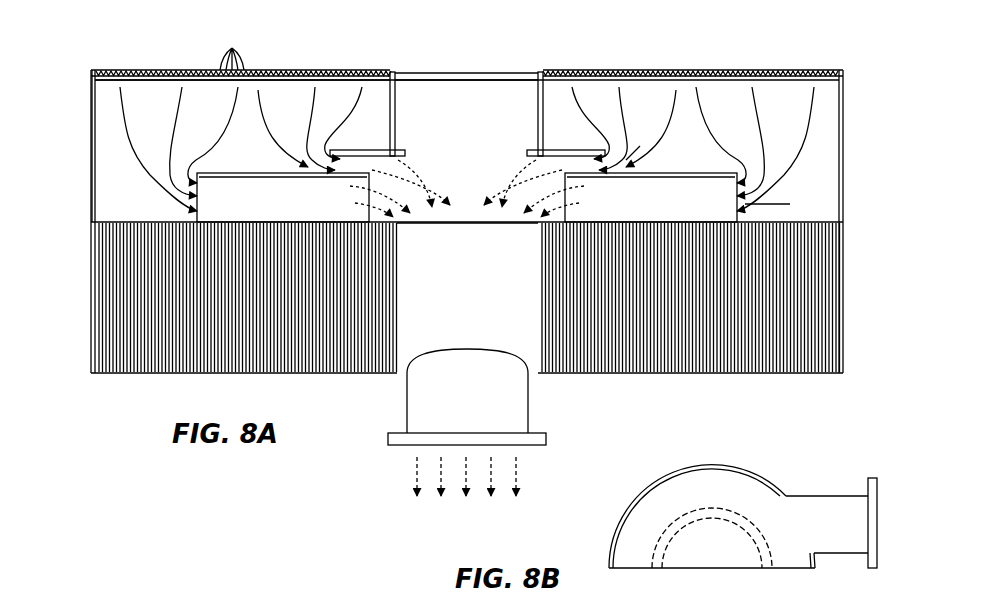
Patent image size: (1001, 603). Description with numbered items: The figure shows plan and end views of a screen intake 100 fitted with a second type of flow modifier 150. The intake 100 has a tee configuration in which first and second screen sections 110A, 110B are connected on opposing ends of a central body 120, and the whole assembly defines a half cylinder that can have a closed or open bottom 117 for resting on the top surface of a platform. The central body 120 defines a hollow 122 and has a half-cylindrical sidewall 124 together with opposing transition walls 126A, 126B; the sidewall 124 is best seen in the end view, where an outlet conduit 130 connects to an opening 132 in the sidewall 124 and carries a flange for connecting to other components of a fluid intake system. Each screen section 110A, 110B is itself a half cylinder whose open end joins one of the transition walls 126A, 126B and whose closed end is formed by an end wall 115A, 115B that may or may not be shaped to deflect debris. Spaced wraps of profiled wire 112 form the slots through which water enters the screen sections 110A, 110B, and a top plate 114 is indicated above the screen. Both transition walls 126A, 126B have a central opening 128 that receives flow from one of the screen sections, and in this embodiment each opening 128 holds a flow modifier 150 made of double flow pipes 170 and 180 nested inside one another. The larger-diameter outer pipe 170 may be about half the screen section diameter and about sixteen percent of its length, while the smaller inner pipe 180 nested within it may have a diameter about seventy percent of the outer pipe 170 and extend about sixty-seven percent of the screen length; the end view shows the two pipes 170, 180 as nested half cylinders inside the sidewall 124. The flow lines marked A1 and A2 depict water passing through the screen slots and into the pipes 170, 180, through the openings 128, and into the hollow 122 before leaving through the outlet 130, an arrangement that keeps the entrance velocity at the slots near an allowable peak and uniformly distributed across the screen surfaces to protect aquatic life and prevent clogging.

In FIG. 8A, the screen intake 100 is at (56, 62).
In FIG. 8B, the screen intake 100 is at (758, 477).
In FIG. 8A, the first screen section 110A is at (184, 70).
In FIG. 8A, the second screen section 110B is at (713, 70).
In FIG. 8A, the profiled wire 112 is at (235, 48).
In FIG. 8A, the top plate 114 is at (278, 80).
In FIG. 8A, the bottom 117 is at (100, 118).
In FIG. 8A, the central body 120 is at (405, 70).
In FIG. 8A, the half-cylindrical sidewall 124 is at (522, 82).
In FIG. 8A, the first transition wall 126A is at (398, 119).
In FIG. 8A, the second transition wall 126B is at (538, 118).
In FIG. 8A, the central opening 128 is at (386, 160).
In FIG. 8A, the hollow 122 is at (448, 152).
In FIG. 8A, the flow modifier 150 is at (125, 198).
In FIG. 8A, the outer flow pipe 170 is at (556, 152).
In FIG. 8B, the outer flow pipe 170 is at (701, 508).
In FIG. 8A, the inner flow pipe 180 is at (690, 174).
In FIG. 8B, the inner flow pipe 180 is at (673, 532).
In FIG. 8A, the first air flow A1 is at (639, 141).
In FIG. 8A, the second air flow A2 is at (779, 201).
In FIG. 8A, the first end wall 115A is at (90, 333).
In FIG. 8A, the second end wall 115B is at (846, 372).
In FIG. 8A, the outlet conduit 130 is at (407, 398).
In FIG. 8B, the outlet conduit 130 is at (838, 496).
In FIG. 8A, the opening 132 is at (528, 372).